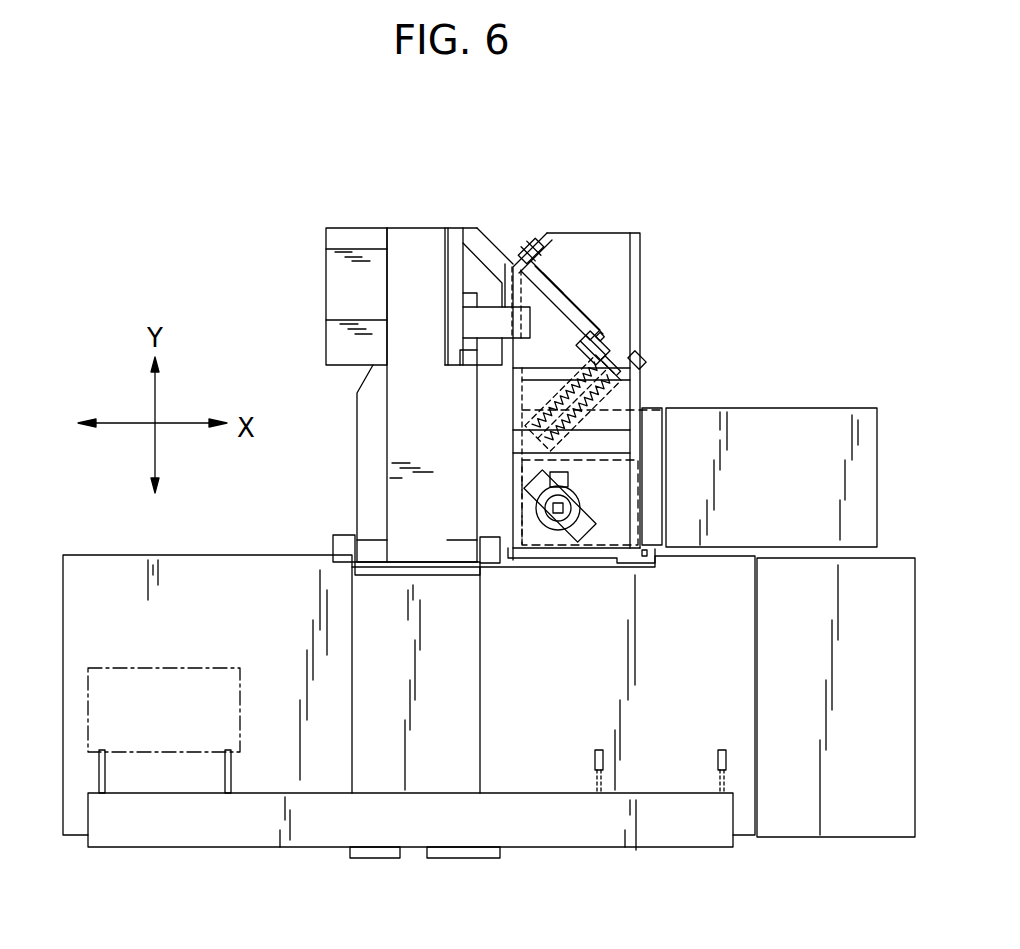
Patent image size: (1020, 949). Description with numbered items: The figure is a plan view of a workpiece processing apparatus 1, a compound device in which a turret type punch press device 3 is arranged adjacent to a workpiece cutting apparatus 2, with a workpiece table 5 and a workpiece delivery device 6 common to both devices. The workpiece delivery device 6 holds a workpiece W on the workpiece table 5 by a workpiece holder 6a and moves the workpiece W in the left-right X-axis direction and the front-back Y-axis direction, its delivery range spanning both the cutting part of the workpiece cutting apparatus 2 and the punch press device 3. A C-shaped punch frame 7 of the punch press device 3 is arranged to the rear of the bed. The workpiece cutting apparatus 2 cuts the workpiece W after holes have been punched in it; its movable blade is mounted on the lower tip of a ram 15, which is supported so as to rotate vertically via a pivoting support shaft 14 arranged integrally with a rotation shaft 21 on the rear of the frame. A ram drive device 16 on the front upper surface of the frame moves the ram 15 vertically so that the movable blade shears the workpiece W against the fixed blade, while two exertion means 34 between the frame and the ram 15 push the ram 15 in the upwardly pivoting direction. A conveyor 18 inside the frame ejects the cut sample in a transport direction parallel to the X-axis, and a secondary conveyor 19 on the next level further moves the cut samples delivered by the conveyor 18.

The workpiece processing apparatus 1 is at (236, 279).
The workpiece cutting apparatus 2 is at (642, 283).
The turret type punch press device 3 is at (401, 230).
The workpiece table 5 is at (558, 769).
The workpiece delivery device 6 is at (245, 830).
The workpiece holder 6a is at (118, 770).
The C-shaped punch frame 7 is at (400, 487).
The pivoting support shaft 14 is at (618, 335).
The ram 15 is at (620, 303).
The ram drive device 16 is at (580, 500).
The conveyor 18 is at (648, 420).
The secondary conveyor 19 is at (833, 422).
The rotation shaft 21 is at (528, 243).
The exertion means 34 is at (568, 351).
The workpiece W is at (185, 668).